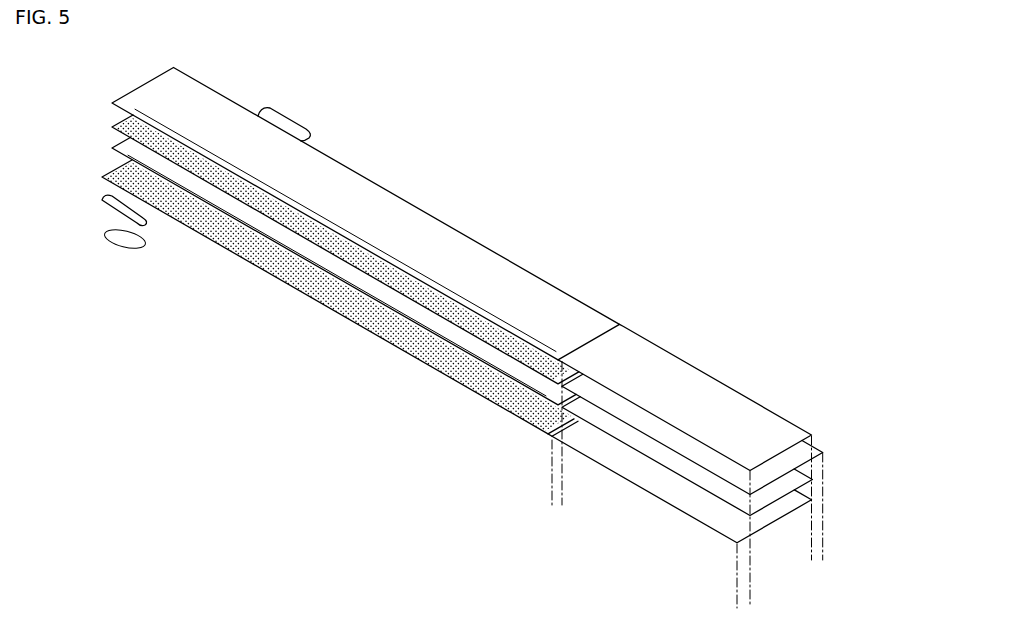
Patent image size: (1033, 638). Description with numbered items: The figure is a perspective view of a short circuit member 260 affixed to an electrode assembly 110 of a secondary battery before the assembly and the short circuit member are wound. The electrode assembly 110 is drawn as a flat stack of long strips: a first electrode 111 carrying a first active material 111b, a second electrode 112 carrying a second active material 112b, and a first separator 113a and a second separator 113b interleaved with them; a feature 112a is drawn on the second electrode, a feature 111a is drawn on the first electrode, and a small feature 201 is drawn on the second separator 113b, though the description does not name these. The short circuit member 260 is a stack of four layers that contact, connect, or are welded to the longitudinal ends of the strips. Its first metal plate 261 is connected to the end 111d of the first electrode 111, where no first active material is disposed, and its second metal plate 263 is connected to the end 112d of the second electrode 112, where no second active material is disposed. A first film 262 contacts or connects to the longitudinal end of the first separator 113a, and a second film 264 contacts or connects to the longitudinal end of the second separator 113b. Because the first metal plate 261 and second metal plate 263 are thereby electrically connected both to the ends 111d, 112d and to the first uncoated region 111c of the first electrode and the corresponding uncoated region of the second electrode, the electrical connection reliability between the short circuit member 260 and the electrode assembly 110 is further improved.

The electrode assembly 110 is at (370, 147).
The first electrode 111 is at (470, 478).
The first electrode protrusion 111a is at (470, 397).
The first active material 111b is at (363, 333).
The first uncoated region 111c is at (425, 360).
The end of the first electrode 111d is at (540, 423).
The second electrode 112 is at (608, 242).
The second active material layer 112a is at (448, 317).
The second active material 112b is at (500, 321).
The end of the second electrode 112d is at (561, 359).
The first separator 113a is at (118, 138).
The second separator 113b is at (152, 90).
The protrusion 201 is at (283, 110).
The short circuit member 260 is at (726, 366).
The first metal plate 261 is at (722, 526).
The first film 262 is at (702, 477).
The second metal plate 263 is at (668, 438).
The second film 264 is at (643, 393).